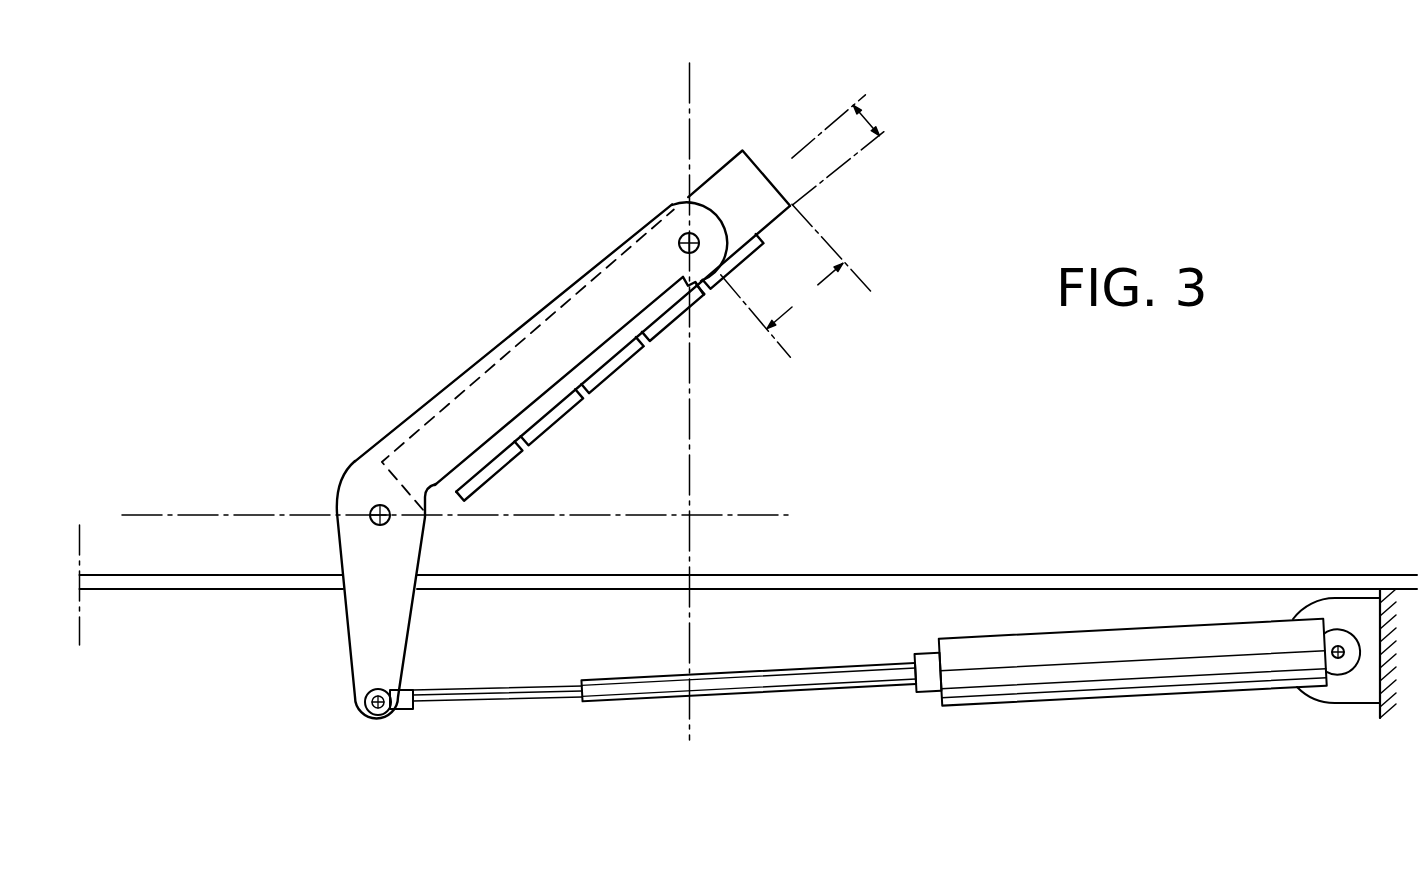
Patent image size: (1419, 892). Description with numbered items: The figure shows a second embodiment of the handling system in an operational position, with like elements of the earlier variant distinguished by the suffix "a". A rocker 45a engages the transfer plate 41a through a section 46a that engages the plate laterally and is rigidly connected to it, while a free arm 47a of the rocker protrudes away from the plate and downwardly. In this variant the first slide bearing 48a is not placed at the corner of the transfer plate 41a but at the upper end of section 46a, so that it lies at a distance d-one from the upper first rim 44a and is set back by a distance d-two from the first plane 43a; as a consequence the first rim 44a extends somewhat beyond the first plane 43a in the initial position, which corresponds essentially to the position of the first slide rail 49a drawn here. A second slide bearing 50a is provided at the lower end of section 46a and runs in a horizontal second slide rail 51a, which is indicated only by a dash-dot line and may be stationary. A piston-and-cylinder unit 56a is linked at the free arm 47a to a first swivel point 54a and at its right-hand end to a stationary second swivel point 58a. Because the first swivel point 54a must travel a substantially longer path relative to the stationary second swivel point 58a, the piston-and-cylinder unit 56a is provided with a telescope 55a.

The transfer plate 41a is at (752, 200).
The first plane 43a is at (829, 181).
The first rim 44a is at (750, 155).
The rocker 45a is at (467, 367).
The section 46a is at (578, 318).
The free arm 47a is at (385, 637).
The first slide bearing 48a is at (680, 236).
The first slide rail 49a is at (692, 88).
The second slide bearing 50a is at (375, 507).
The second slide rail 51a is at (176, 514).
The first swivel point 54a is at (381, 711).
The telescope 55a is at (753, 697).
The piston-and-cylinder unit 56a is at (1052, 703).
The second swivel point 58a is at (1341, 659).